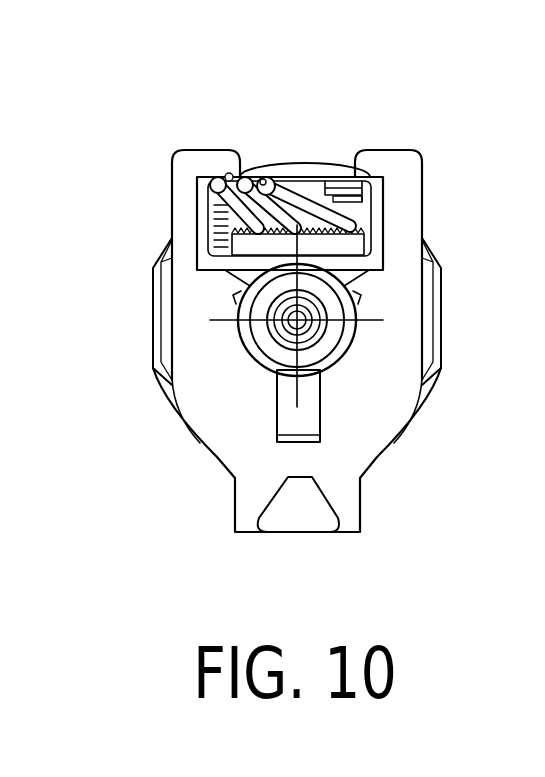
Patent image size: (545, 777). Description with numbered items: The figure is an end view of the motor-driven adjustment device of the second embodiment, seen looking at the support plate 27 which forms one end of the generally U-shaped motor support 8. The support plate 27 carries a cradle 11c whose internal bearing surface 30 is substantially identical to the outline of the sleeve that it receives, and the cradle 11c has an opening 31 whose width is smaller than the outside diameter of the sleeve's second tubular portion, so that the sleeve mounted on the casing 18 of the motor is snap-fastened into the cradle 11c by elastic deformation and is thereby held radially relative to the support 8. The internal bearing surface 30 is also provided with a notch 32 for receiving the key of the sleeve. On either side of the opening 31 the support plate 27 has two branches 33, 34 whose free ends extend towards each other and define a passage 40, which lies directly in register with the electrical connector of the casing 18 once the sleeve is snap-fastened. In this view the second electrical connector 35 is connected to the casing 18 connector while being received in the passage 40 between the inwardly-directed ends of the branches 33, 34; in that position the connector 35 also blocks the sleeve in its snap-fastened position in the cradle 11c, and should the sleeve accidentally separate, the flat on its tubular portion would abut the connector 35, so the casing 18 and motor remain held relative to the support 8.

The motor support 8 is at (230, 540).
The cradle 11c is at (365, 342).
The casing 18 is at (278, 163).
The support plate 27 is at (378, 457).
The internal bearing surface 30 is at (243, 345).
The opening 31 is at (247, 287).
The notch 32 is at (272, 407).
The branch 33 is at (377, 163).
The branch 34 is at (207, 162).
The second electrical connector 35 is at (333, 184).
The passage 40 is at (200, 182).